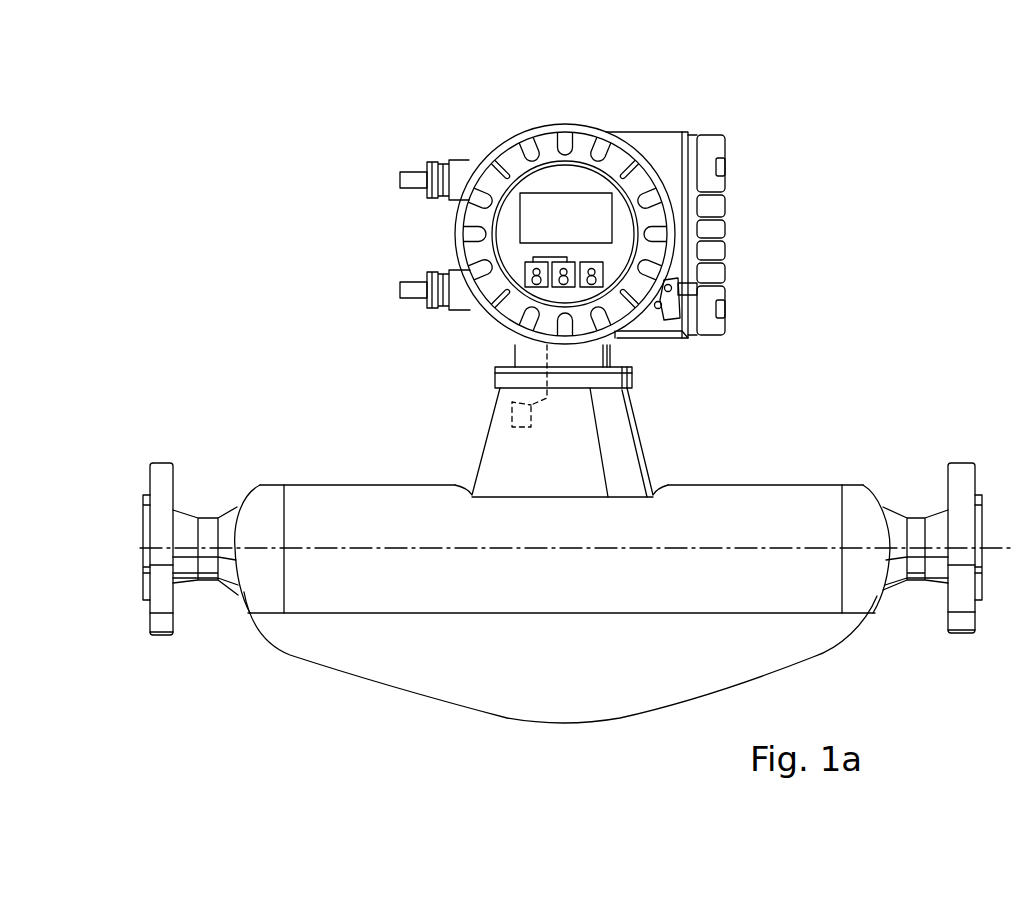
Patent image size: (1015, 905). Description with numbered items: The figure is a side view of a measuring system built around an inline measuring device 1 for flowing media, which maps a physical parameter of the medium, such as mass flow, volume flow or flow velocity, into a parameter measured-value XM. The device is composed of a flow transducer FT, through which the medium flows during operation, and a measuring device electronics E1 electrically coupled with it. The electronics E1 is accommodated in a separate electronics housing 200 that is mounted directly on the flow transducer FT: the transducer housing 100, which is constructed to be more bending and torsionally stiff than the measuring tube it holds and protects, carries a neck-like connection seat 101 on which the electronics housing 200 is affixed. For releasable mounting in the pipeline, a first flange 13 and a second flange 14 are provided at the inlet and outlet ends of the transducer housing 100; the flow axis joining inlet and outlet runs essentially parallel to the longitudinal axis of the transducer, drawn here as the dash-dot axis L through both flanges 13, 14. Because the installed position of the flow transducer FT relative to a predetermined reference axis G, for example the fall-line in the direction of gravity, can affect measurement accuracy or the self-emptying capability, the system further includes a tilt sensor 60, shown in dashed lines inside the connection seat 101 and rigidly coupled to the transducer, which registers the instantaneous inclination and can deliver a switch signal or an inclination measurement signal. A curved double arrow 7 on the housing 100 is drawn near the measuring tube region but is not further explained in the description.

The inline measuring device 1 is at (733, 346).
The oscillation direction of measuring tube 7 is at (330, 591).
The first flange 13 is at (162, 478).
The second flange 14 is at (960, 475).
The tilt sensor 60 is at (507, 432).
The transducer housing 100 is at (742, 505).
The neck / connecting piece of transducer housing 101 is at (618, 430).
The electronics housing 200 is at (662, 148).
The measuring device electronics E1 is at (752, 190).
The parameter measured-value XM is at (340, 186).
The reference axis G is at (270, 323).
The longitudinal axis L is at (1012, 548).
The flow transducer FT is at (560, 657).